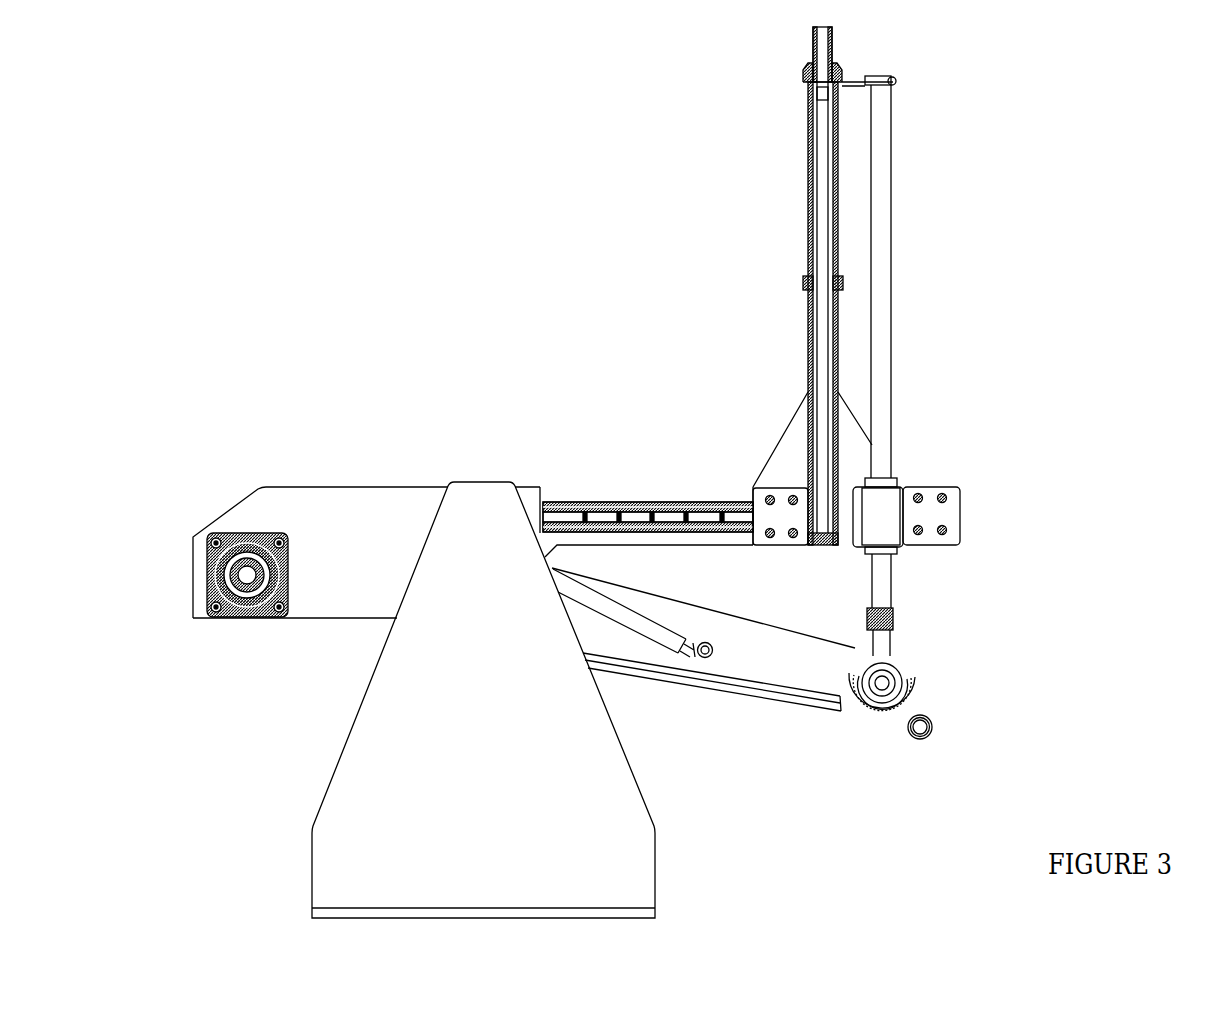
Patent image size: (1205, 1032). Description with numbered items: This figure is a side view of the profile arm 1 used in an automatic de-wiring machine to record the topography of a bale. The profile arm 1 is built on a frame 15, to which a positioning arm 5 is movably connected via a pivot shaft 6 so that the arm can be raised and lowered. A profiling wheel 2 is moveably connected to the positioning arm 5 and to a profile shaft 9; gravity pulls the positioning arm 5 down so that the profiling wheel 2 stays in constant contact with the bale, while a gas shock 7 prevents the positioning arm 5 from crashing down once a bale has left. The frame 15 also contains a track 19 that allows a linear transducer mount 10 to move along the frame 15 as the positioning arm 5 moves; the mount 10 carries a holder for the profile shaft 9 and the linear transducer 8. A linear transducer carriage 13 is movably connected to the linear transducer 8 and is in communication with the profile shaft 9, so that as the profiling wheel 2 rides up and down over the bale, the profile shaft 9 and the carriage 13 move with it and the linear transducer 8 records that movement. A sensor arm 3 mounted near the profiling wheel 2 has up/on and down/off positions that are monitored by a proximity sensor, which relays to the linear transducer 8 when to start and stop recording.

The profile arm 1 is at (187, 497).
The profiling wheel 2 is at (923, 665).
The sensor arm 3 is at (930, 737).
The positioning arm 5 is at (770, 677).
The pivot shaft 6 is at (205, 618).
The gas shock 7 is at (640, 620).
The linear transducer 8 is at (808, 196).
The profile shaft 9 is at (891, 247).
The linear transducer mount 10 is at (780, 441).
The linear transducer carriage 13 is at (803, 83).
The frame 15 is at (322, 874).
The track 19 is at (620, 498).